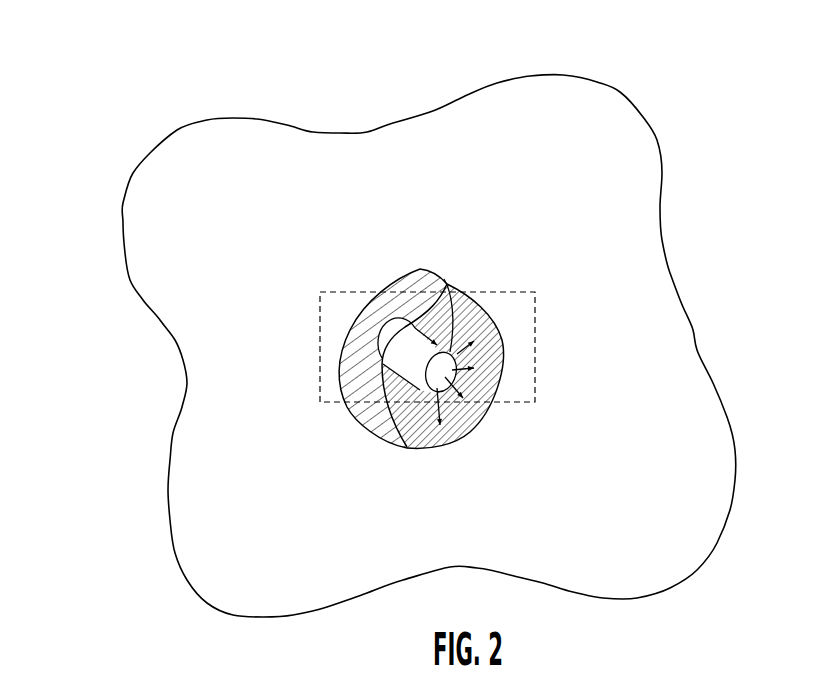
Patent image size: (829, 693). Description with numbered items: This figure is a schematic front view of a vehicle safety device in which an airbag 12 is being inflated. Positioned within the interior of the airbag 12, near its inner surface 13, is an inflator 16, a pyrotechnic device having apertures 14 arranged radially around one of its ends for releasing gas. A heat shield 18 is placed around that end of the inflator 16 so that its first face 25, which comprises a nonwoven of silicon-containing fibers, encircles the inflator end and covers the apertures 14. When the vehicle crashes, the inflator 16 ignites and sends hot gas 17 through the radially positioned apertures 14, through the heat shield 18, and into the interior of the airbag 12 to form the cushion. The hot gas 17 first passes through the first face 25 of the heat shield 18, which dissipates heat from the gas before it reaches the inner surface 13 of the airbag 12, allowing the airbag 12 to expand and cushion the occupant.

The airbag 12 is at (620, 92).
The inner surface of the airbag 13 is at (175, 208).
The apertures 14 is at (478, 393).
The inflator 16 is at (520, 287).
The hot gas 17 is at (472, 393).
The heat shield 18 is at (468, 422).
The first face of the heat shield 25 is at (358, 405).